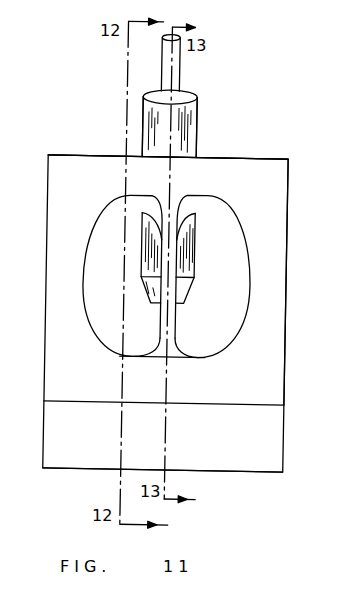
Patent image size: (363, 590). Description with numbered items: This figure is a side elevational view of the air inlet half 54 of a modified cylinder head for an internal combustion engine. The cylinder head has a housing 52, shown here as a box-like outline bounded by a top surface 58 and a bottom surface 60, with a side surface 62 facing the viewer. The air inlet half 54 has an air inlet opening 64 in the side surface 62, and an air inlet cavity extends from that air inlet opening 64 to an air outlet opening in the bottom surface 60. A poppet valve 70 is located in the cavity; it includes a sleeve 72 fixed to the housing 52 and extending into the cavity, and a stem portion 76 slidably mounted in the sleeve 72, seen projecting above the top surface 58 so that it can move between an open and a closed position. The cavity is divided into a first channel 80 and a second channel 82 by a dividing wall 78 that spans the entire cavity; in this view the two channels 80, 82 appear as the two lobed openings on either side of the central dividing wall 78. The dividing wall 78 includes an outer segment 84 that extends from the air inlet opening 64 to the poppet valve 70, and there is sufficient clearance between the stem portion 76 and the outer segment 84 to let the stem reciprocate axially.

The housing 52 is at (72, 170).
The air inlet half 54 is at (98, 127).
The top surface 58 is at (270, 157).
The bottom surface 60 is at (268, 473).
The side surface 62 is at (260, 199).
The air inlet opening 64 is at (243, 330).
The poppet valve 70 is at (206, 94).
The sleeve 72 is at (190, 125).
The stem portion 76 is at (178, 75).
The dividing wall 78 is at (187, 308).
The first channel 80 is at (240, 268).
The second channel 82 is at (100, 244).
The outer segment 84 is at (173, 243).